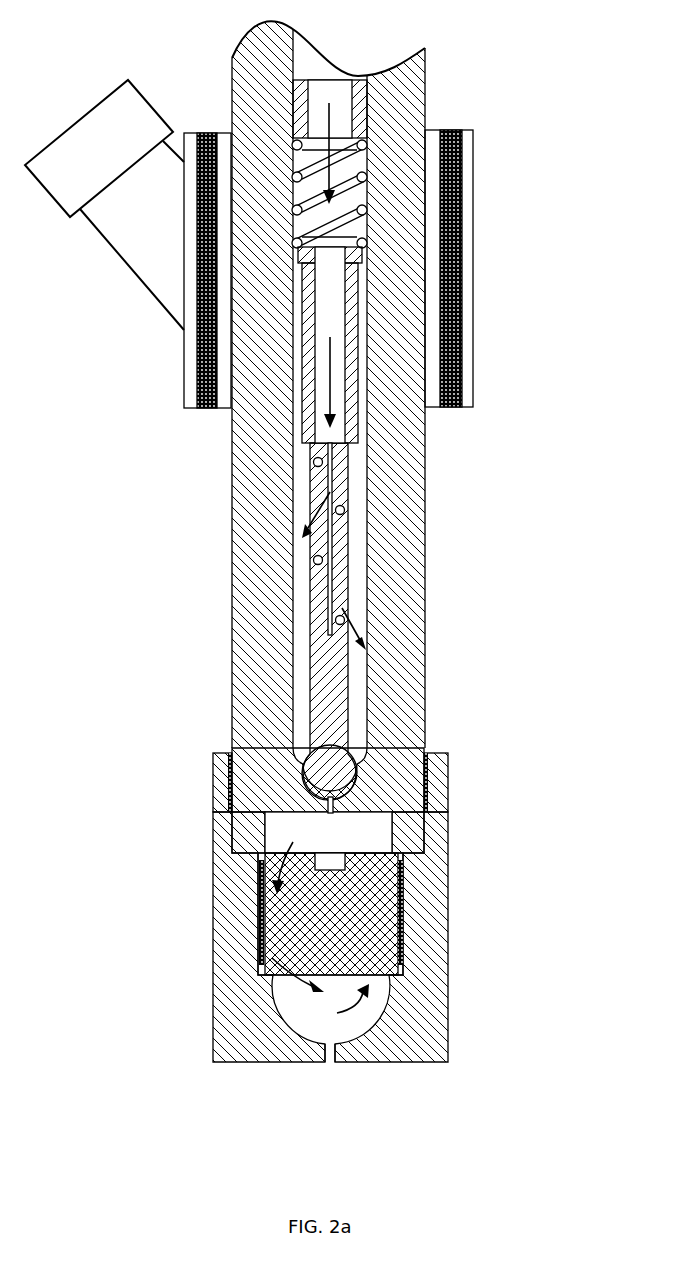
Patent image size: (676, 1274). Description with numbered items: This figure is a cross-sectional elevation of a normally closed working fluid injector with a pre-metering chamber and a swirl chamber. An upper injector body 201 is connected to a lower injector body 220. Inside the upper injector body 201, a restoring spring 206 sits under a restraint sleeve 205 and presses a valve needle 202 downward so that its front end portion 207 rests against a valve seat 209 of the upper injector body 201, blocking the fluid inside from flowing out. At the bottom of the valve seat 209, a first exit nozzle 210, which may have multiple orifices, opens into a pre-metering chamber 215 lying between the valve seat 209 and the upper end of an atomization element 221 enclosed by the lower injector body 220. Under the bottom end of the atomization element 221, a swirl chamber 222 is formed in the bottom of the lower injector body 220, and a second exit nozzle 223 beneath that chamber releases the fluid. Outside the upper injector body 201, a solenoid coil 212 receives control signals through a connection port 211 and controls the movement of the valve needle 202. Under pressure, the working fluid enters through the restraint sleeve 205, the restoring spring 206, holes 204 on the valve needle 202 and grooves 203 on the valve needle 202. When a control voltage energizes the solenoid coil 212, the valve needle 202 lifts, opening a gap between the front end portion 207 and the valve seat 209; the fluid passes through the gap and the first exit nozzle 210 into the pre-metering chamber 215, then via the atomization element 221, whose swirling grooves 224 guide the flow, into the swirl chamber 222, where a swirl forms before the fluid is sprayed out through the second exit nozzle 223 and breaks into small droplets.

The upper injector body 201 is at (423, 500).
The valve needle 202 is at (307, 429).
The grooves 203 is at (337, 622).
The holes 204 is at (313, 560).
The restraint sleeve 205 is at (297, 80).
The restoring spring 206 is at (363, 150).
The front end portion 207 is at (307, 758).
The valve seat 209 is at (275, 795).
The first exit nozzle 210 is at (328, 806).
The connection port 211 is at (130, 117).
The solenoid coil 212 is at (197, 327).
The pre-metering chamber 215 is at (275, 862).
The lower injector body 220 is at (448, 834).
The atomization element 221 is at (385, 942).
The swirl chamber 222 is at (337, 1028).
The second exit nozzle 223 is at (335, 1047).
The swirling grooves 224 is at (272, 975).